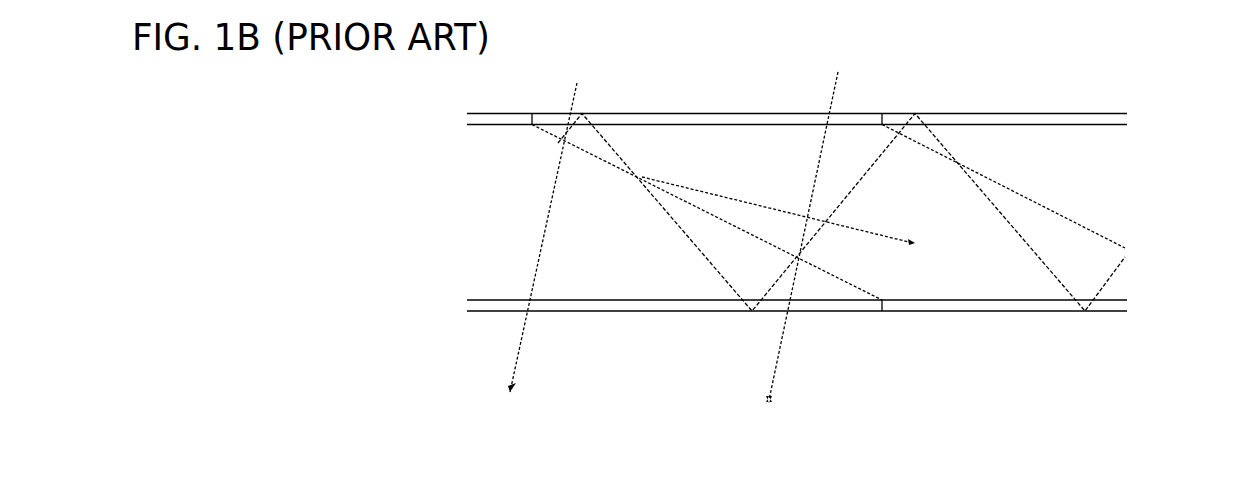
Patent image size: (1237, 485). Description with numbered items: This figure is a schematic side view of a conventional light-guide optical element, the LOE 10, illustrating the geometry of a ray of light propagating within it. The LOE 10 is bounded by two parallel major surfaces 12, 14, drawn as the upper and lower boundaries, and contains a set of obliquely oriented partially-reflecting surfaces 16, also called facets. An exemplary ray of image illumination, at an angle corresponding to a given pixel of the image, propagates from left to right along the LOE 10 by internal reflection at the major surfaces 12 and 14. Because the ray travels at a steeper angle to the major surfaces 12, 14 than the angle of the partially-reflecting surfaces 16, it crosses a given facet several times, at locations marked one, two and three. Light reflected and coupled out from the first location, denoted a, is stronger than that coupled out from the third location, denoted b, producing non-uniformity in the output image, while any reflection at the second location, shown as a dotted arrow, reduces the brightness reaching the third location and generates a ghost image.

The LOE 10 is at (1130, 97).
The major surface 12 is at (1002, 112).
The major surface 14 is at (496, 312).
The partially-reflecting surfaces 16 is at (583, 150).